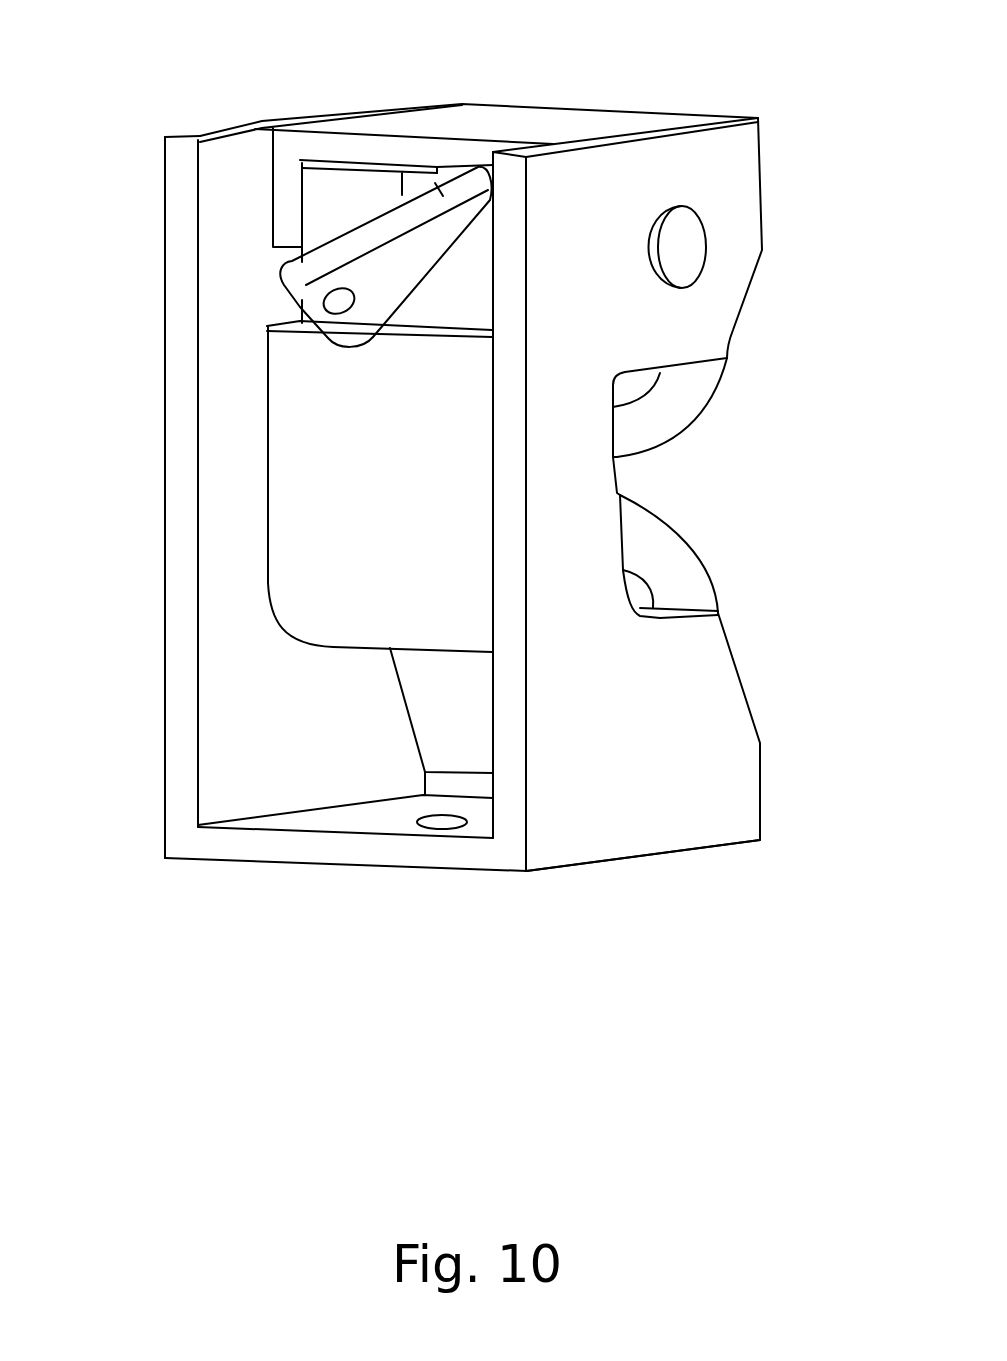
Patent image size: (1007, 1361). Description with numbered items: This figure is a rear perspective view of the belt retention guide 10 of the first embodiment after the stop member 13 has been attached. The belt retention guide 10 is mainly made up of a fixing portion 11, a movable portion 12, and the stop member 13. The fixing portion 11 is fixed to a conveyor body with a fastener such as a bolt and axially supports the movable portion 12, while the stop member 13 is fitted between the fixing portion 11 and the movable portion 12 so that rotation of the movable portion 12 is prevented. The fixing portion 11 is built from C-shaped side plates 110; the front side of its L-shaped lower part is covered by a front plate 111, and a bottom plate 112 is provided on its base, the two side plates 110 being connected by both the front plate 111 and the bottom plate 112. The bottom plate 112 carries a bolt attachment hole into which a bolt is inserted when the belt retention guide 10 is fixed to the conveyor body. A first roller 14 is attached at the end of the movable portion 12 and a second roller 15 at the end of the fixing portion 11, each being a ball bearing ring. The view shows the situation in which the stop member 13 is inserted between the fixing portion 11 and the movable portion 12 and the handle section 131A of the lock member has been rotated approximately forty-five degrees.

The belt retention guide 10 is at (428, 946).
The fixing portion 11 is at (641, 862).
The movable portion 12 is at (548, 112).
The stop member 13 is at (316, 200).
The first roller 14 is at (687, 412).
The second roller 15 is at (687, 563).
The side plate 110 is at (178, 536).
The front plate 111 is at (293, 413).
The bottom plate 112 is at (357, 822).
The handle section 131A is at (385, 217).